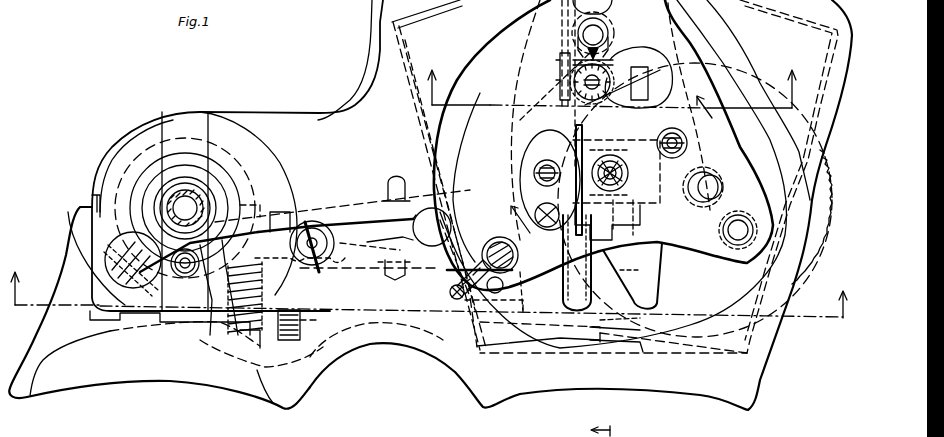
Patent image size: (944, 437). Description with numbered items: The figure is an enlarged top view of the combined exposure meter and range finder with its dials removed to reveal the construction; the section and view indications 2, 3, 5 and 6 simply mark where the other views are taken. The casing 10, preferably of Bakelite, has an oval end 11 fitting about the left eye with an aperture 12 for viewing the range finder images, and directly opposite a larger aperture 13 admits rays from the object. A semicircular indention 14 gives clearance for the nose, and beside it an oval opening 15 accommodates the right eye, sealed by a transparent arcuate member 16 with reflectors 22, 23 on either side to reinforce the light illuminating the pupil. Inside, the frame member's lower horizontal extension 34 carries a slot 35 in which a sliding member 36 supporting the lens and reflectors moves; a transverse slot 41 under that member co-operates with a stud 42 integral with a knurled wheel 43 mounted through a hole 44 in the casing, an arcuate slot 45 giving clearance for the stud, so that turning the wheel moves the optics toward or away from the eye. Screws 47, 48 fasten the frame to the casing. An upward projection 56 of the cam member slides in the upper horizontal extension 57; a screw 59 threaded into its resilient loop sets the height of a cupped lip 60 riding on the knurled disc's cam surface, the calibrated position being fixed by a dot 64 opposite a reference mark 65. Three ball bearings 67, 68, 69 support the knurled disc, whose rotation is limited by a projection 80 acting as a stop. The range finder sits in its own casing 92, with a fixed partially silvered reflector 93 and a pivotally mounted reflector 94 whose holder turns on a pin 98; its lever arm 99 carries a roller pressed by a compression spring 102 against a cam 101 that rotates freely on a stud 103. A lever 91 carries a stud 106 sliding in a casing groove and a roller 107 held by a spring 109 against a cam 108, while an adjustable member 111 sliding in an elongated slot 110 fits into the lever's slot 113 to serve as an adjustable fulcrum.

The casing 10 is at (378, 50).
The oval-shaped end of casing 11 is at (167, 383).
The aperture 12 is at (141, 327).
The larger aperture 13 is at (138, 118).
The semicircular indention 14 is at (378, 352).
The oval-shaped opening 15 is at (665, 390).
The transparent arcuate member 16 is at (530, 348).
The reflector 22 is at (420, 147).
The reflector 23 is at (770, 310).
The section line 2- 2 is at (429, 291).
The section line 3- 3 is at (598, 431).
The view arrows 5 is at (605, 156).
The section line 6- 6 is at (617, 85).
The horizontal extension of frame member 34 is at (665, 273).
The slot 35 is at (598, 306).
The sliding member 36 is at (640, 212).
The transverse slot 41 is at (673, 205).
The stud 42 is at (570, 128).
The knurled wheel 43 is at (818, 240).
The hole in underside of casing 44 is at (712, 185).
The arcuate slot 45 is at (625, 270).
The screw 47 is at (535, 172).
The screw 48 is at (689, 143).
The upward projection 56 is at (562, 87).
The upper horizontal extension of frame member 57 is at (528, 72).
The screw 59 is at (607, 70).
The cupped lip 60 is at (610, 34).
The dot 64 is at (570, 62).
The reference mark 65 is at (573, 30).
The ball bearing 67 is at (609, 23).
The ball bearing 68 is at (516, 270).
The ball bearing 69 is at (733, 248).
The projection 80 is at (590, 355).
The lever 91 is at (353, 207).
The range finder casing 92 is at (354, 312).
The fixed reflector 93 is at (110, 268).
The pivotally mounted reflector 94 is at (451, 295).
The pin 98 is at (478, 310).
The lever arm 99 is at (395, 281).
The cam 101 is at (147, 185).
The compression spring 102 is at (315, 311).
The stud 103 is at (200, 205).
The pin or stud 106 is at (184, 278).
The roller 107 is at (199, 300).
The cam 108 is at (128, 203).
The spring 109 is at (247, 340).
The elongated slot 110 is at (367, 220).
The adjustable member 111 is at (326, 268).
The slot 113 is at (343, 250).